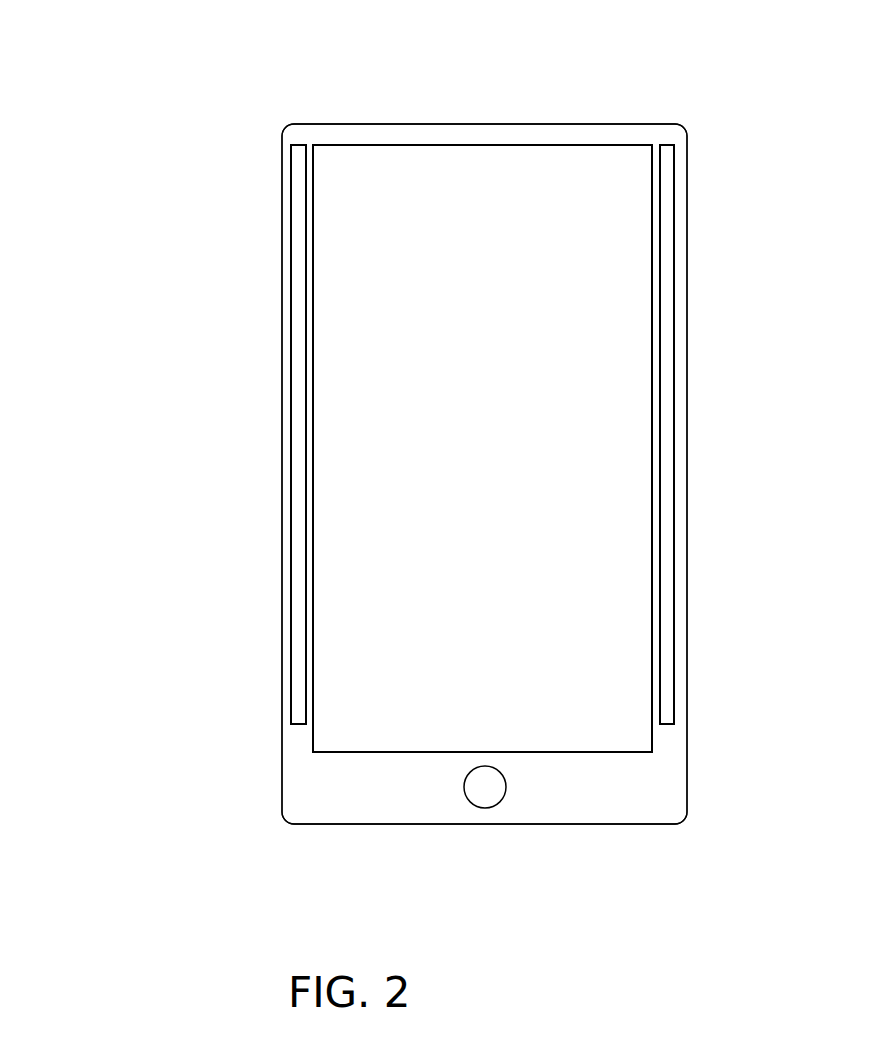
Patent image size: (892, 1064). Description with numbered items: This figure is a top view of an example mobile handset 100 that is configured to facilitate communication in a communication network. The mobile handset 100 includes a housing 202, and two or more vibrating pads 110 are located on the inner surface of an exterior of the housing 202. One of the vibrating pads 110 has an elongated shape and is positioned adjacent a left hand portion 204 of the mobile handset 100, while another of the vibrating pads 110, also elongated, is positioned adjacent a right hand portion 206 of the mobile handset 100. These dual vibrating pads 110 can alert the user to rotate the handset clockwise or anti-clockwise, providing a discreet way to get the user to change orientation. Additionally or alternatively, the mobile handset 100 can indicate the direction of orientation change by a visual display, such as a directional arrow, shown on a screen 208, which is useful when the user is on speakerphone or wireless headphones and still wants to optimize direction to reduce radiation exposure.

The mobile handset 100 is at (163, 195).
The housing 202 is at (529, 124).
The left hand portion 204 is at (280, 448).
The right hand portion 206 is at (690, 392).
The screen 208 is at (498, 458).
The vibrating pads 110 is at (297, 612).